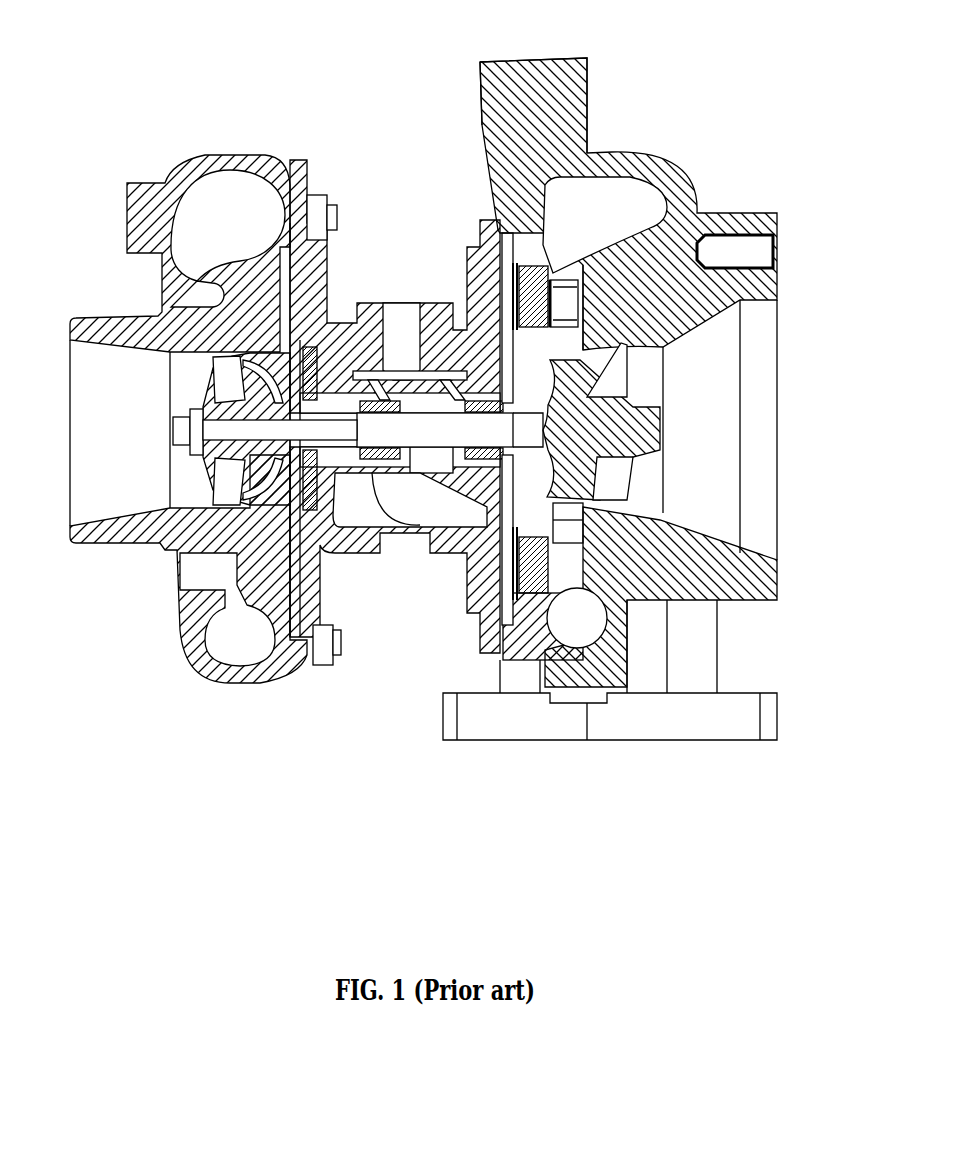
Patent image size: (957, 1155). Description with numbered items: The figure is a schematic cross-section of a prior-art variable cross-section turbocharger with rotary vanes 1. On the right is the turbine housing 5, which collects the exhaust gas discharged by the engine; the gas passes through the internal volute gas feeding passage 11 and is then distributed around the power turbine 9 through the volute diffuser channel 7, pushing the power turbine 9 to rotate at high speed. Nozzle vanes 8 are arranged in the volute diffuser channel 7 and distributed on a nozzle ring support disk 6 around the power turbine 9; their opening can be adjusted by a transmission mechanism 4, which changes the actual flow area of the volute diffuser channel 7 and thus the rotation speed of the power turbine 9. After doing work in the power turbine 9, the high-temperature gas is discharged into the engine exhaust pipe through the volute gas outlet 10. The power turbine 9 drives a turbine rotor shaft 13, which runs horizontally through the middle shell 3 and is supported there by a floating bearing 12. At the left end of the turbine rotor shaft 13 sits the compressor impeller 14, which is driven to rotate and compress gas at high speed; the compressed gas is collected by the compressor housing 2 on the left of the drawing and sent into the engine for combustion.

The variable cross-section turbocharger with rotary vanes 1 is at (143, 155).
The compressor housing 2 is at (203, 158).
The middle shell 3 is at (313, 160).
The transmission mechanism 4 is at (495, 72).
The turbine housing 5 is at (565, 150).
The nozzle ring support disk 6 is at (553, 273).
The volute diffuser channel 7 is at (570, 318).
The nozzle vane 8 is at (578, 312).
The power turbine 9 is at (608, 388).
The volute gas outlet 10 is at (710, 490).
The internal volute gas feeding passage 11 is at (580, 620).
The floating bearing 12 is at (480, 465).
The turbine rotor shaft 13 is at (440, 427).
The compressor impeller 14 is at (253, 500).